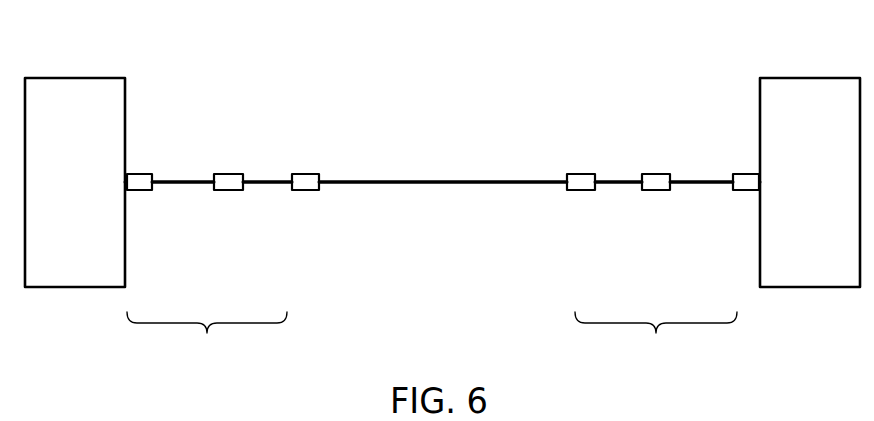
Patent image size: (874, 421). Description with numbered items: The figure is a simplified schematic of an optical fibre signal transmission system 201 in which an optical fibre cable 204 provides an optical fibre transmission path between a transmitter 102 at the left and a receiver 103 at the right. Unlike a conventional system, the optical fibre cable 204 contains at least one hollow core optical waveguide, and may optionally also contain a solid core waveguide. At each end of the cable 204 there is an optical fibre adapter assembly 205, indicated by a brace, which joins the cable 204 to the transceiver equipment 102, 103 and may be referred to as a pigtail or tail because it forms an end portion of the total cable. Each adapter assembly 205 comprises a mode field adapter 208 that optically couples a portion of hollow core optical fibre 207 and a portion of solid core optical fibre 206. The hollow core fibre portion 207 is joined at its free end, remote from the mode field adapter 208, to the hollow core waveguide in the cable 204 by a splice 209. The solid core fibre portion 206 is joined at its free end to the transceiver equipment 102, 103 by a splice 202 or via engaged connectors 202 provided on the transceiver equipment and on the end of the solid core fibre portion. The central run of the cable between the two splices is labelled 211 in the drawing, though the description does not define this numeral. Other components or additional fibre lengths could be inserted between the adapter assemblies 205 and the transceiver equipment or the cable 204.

The transmitter 102 is at (72, 78).
The receiver 103 is at (808, 78).
The optical fibre signal transmission system 201 is at (304, 86).
The splice or engaged connectors 202 is at (137, 174).
The optical fibre cable 204 is at (440, 180).
The optical fibre adapter assembly 205 is at (432, 342).
The portion of solid core optical fibre 206 is at (178, 188).
The portion of hollow core optical fibre 207 is at (268, 190).
The mode field adapter 208 is at (229, 190).
The splice 209 is at (305, 190).
The central cable portion 211 is at (690, 162).